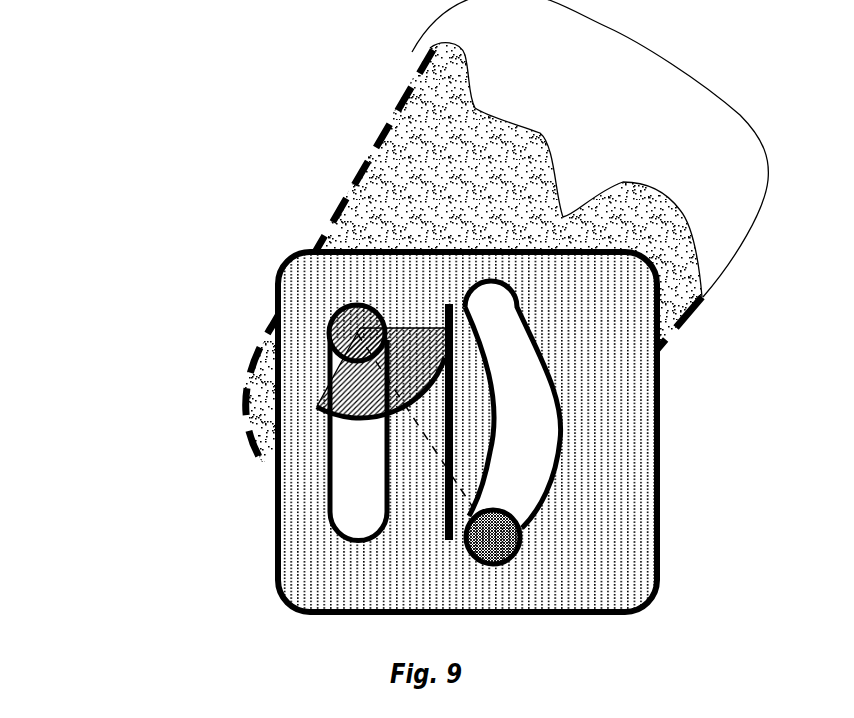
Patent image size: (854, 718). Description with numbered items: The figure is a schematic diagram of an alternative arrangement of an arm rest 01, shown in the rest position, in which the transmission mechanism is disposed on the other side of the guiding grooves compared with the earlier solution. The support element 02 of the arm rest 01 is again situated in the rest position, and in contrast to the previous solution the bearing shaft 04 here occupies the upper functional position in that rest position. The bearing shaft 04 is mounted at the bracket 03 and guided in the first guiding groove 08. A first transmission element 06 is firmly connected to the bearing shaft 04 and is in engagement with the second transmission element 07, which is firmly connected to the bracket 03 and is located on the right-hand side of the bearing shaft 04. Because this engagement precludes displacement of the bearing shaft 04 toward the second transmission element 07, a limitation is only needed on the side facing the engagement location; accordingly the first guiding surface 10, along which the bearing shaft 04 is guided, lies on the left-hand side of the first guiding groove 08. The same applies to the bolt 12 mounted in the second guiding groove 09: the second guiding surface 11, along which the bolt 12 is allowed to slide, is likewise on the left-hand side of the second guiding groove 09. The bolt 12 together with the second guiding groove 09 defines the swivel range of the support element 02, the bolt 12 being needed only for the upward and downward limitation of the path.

The arm rest 01 is at (371, 380).
The support element 02 is at (430, 146).
The bracket 03 is at (615, 378).
The bearing shaft 04 is at (350, 335).
The first transmission element 06 is at (355, 388).
The second transmission element 07 is at (443, 488).
The first guiding groove 08 is at (352, 457).
The second guiding groove 09 is at (520, 457).
The first guiding surface 10 is at (345, 498).
The second guiding surface 11 is at (497, 413).
The bolt 12 is at (505, 567).